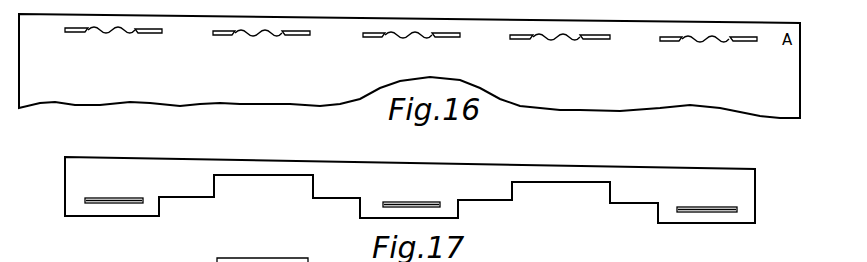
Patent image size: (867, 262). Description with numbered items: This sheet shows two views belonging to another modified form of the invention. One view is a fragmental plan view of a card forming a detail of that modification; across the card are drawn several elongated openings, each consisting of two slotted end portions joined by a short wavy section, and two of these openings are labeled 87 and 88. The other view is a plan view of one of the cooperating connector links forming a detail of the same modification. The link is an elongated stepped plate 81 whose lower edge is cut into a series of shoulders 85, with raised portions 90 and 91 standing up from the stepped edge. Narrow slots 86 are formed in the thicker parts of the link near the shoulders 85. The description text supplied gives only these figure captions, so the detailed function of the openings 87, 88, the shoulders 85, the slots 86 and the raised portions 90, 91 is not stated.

In FIG. 17, the plate 81 is at (490, 195).
In FIG. 17, the shoulder 85 is at (150, 213).
In FIG. 17, the slot 86 is at (95, 203).
In FIG. 16, the slot with corrugated portion 87 is at (150, 34).
In FIG. 16, the slot with corrugated portion 88 is at (417, 38).
In FIG. 17, the raised portion 90 is at (257, 176).
In FIG. 17, the raised portion 91 is at (563, 183).